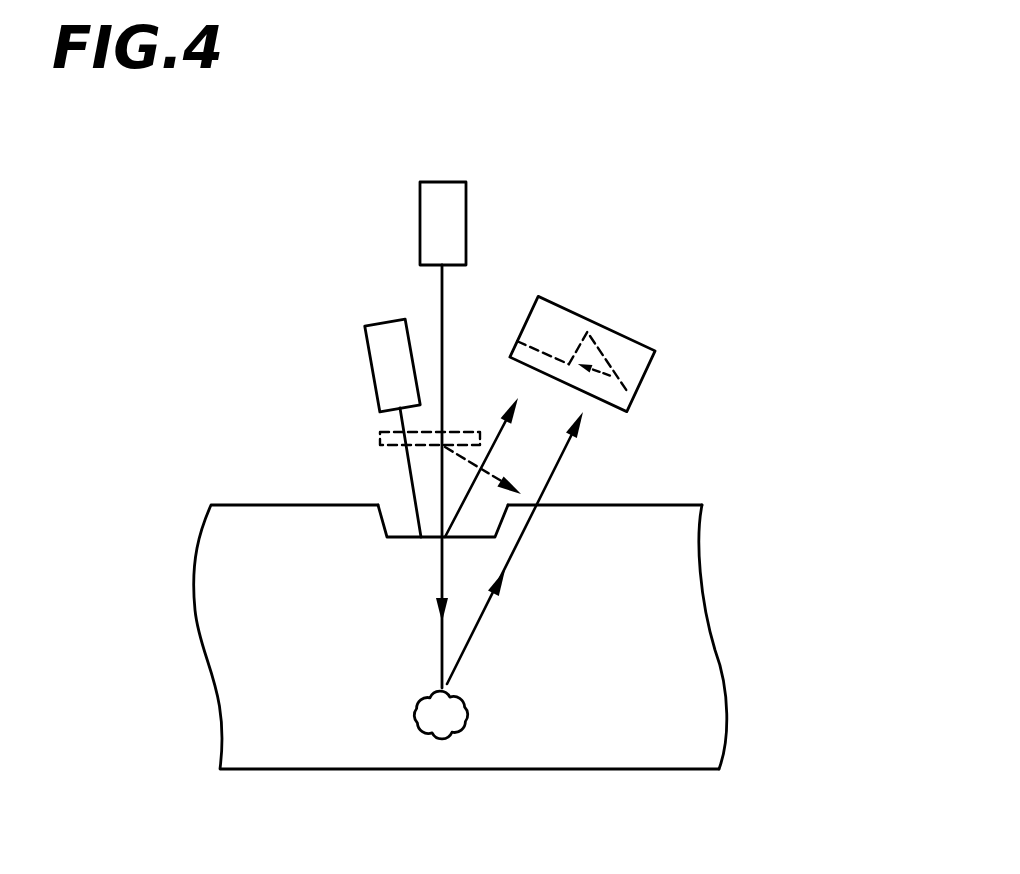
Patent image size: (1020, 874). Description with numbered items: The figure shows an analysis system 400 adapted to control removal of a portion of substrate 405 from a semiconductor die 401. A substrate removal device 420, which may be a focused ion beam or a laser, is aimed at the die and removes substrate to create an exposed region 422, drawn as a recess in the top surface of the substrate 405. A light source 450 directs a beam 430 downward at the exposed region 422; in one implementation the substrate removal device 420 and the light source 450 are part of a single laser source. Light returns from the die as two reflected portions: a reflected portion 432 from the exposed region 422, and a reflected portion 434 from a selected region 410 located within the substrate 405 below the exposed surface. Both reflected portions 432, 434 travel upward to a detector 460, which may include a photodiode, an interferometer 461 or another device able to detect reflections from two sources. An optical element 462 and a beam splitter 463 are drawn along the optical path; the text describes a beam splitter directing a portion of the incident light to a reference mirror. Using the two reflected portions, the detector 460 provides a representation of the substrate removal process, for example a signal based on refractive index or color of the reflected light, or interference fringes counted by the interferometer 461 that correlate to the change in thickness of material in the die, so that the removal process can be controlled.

The analysis system 400 is at (598, 125).
The semiconductor die 401 is at (787, 643).
The substrate 405 is at (673, 570).
The selected region 410 is at (465, 732).
The substrate removal device 420 is at (368, 372).
The exposed region 422 is at (397, 530).
The incident light beam 430 is at (442, 291).
The reflected portion from the exposed region 432 is at (488, 458).
The reflected portion from the selected region 434 is at (548, 485).
The light source 450 is at (442, 180).
The detector 460 is at (647, 382).
The interferometer 461 is at (557, 313).
The optical element 462 is at (603, 350).
The beam splitter 463 is at (457, 432).